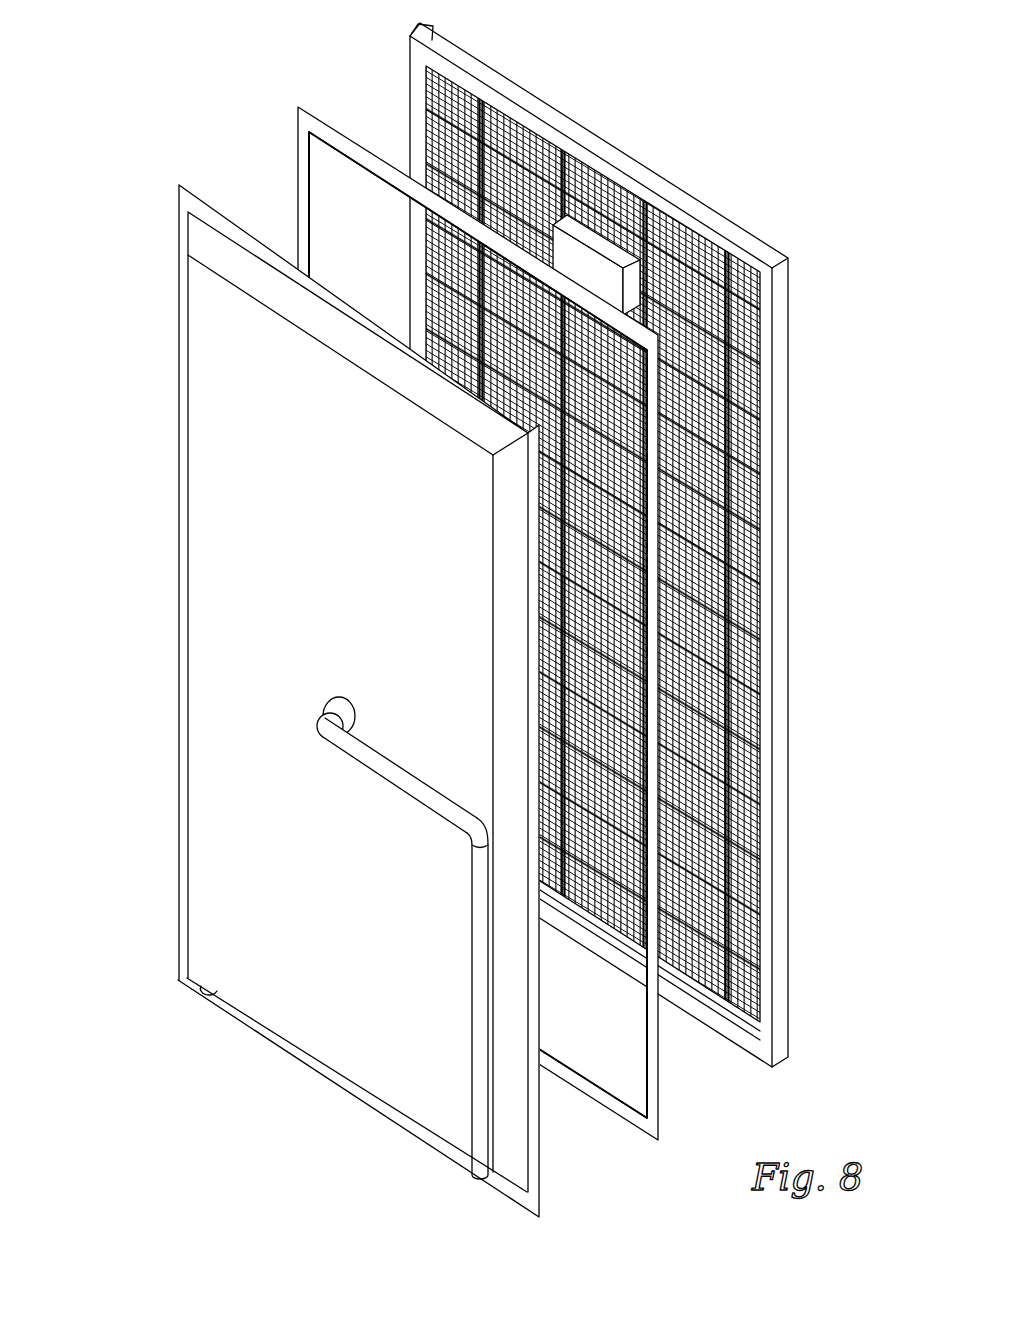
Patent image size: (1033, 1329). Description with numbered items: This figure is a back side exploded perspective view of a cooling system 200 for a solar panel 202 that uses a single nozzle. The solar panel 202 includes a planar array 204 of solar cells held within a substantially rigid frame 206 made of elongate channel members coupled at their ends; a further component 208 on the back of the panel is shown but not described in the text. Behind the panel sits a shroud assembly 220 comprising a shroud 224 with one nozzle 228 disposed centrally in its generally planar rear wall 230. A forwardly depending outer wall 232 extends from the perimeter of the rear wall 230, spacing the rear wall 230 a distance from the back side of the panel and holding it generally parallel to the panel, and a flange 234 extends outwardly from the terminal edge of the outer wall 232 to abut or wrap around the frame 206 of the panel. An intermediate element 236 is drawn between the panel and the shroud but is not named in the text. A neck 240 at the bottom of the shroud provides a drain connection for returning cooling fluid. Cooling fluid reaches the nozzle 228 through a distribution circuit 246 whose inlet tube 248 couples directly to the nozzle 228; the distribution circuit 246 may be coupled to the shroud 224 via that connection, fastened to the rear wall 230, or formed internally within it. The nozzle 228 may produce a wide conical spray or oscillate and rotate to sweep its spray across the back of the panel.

The cooling system 200 is at (429, 610).
The solar panel 202 is at (610, 533).
The planar array 204 is at (520, 146).
The frame 206 is at (659, 175).
The mounting block 208 is at (645, 260).
The shroud assembly 220 is at (355, 702).
The shroud 224 is at (179, 354).
The nozzle 228 is at (341, 694).
The rear wall 230 is at (207, 832).
The outer wall 232 is at (515, 1132).
The flange 234 is at (543, 1189).
The intermediate frame 236 is at (659, 1066).
The neck 240 is at (196, 990).
The distribution circuit 246 is at (462, 1062).
The inlet tube 248 is at (402, 904).